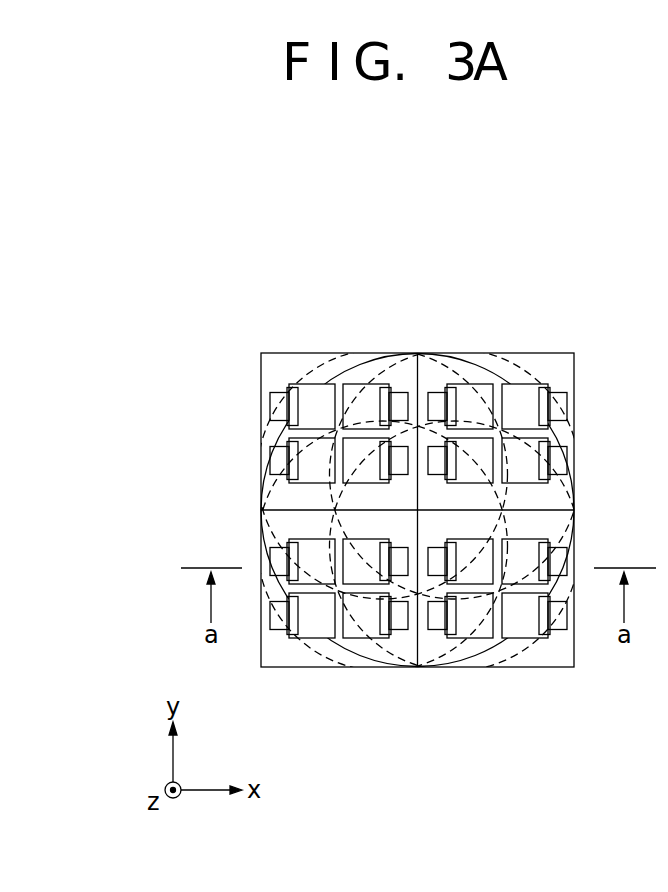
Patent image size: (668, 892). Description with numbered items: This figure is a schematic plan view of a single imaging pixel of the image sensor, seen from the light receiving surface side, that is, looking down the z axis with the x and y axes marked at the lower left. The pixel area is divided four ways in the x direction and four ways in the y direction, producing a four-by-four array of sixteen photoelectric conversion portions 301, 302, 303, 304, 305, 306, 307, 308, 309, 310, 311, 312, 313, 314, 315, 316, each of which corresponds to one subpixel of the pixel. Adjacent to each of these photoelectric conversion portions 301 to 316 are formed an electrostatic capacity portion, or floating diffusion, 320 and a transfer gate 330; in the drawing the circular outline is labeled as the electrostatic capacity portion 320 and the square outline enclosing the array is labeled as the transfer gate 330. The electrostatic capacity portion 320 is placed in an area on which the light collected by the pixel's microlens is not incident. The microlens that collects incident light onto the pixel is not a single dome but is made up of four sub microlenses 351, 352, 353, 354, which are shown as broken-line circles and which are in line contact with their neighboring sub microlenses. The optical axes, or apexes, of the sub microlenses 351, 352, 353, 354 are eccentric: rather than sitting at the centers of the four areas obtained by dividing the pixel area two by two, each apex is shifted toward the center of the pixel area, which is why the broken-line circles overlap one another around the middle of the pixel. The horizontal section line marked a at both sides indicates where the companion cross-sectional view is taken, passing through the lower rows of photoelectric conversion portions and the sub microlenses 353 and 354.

The photoelectric conversion portion 301 is at (320, 392).
The photoelectric conversion portion 302 is at (365, 398).
The photoelectric conversion portion 303 is at (468, 398).
The photoelectric conversion portion 304 is at (522, 395).
The photoelectric conversion portion 305 is at (272, 457).
The photoelectric conversion portion 306 is at (342, 438).
The photoelectric conversion portion 307 is at (494, 438).
The photoelectric conversion portion 308 is at (567, 458).
The photoelectric conversion portion 309 is at (270, 557).
The photoelectric conversion portion 310 is at (342, 541).
The photoelectric conversion portion 311 is at (494, 541).
The photoelectric conversion portion 312 is at (567, 557).
The photoelectric conversion portion 313 is at (306, 639).
The photoelectric conversion portion 314 is at (362, 639).
The photoelectric conversion portion 315 is at (472, 639).
The photoelectric conversion portion 316 is at (530, 639).
The electrostatic capacity portion (floating diffusion) 320 is at (261, 404).
The transfer gate 330 is at (274, 353).
The sub microlens 351 is at (326, 384).
The sub microlens 352 is at (510, 384).
The sub microlens 353 is at (340, 666).
The sub microlens 354 is at (496, 666).